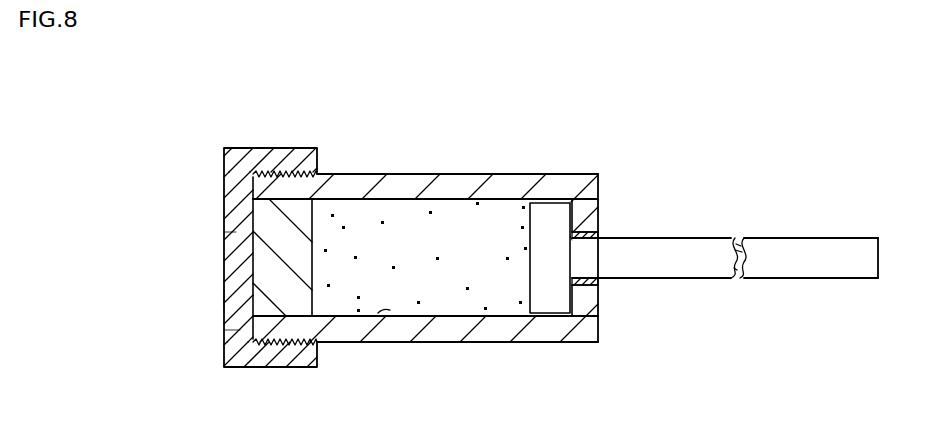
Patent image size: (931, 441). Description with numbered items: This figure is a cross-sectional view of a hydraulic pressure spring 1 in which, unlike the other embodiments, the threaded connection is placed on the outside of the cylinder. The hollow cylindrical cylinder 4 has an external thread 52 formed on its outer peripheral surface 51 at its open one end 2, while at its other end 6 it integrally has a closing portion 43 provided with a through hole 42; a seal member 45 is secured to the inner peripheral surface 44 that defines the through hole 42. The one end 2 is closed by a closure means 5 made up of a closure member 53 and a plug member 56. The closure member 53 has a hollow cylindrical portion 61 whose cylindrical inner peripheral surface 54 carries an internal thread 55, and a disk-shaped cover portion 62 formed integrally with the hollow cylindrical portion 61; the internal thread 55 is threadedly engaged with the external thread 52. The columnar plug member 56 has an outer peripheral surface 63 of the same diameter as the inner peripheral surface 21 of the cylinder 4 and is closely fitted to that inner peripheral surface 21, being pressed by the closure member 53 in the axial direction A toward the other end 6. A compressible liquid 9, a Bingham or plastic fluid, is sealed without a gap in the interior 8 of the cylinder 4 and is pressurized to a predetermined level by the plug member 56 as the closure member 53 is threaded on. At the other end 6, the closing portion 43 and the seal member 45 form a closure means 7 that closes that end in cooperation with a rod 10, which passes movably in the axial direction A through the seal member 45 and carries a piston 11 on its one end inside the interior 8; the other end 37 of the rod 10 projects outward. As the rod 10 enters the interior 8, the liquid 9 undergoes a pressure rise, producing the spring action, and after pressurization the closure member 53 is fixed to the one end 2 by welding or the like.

The hydraulic pressure spring 1 is at (607, 147).
The one end of the cylinder 2 is at (260, 197).
The cylinder 4 is at (427, 173).
The closure means 5 is at (236, 147).
The other end of the cylinder 6 is at (585, 333).
The closure means 7 is at (600, 198).
The interior of the cylinder 8 is at (496, 302).
The compressible liquid 9 is at (490, 233).
The rod 10 is at (703, 268).
The piston 11 is at (547, 300).
The inner peripheral surface of the cylinder 21 is at (390, 310).
The other end of the rod 37 is at (847, 245).
The through hole 42 is at (590, 280).
The closing portion 43 is at (584, 319).
The inner peripheral surface defining the through hole 44 is at (570, 242).
The seal member 45 is at (600, 237).
The outer peripheral surface of the cylinder 51 is at (378, 173).
The external thread 52 is at (286, 176).
The closure member 53 is at (221, 297).
The inner peripheral surface of the closure member 54 is at (288, 343).
The internal thread 55 is at (268, 347).
The plug member 56 is at (260, 263).
The hollow cylindrical portion 61 is at (282, 163).
The disk-shaped cover portion 62 is at (237, 233).
The outer peripheral surface of the plug member 63 is at (244, 329).
The axial direction A is at (762, 222).